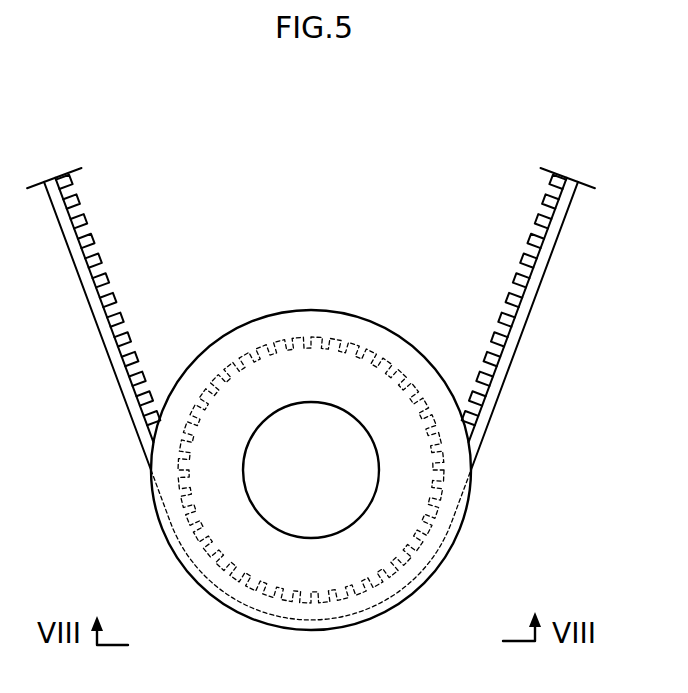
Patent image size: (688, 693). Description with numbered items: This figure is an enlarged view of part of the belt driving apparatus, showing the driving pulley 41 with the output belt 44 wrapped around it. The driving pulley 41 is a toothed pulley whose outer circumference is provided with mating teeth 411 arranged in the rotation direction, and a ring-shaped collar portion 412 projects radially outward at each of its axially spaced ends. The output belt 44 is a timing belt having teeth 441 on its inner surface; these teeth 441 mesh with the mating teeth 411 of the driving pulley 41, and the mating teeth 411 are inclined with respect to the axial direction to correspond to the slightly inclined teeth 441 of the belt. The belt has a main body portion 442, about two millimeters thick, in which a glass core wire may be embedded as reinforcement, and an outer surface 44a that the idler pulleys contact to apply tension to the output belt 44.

The driving pulley 41 is at (309, 431).
The mating teeth 411 is at (278, 343).
The collar portion 412 is at (222, 337).
The output belt 44 is at (336, 394).
The teeth 441 is at (528, 239).
The main body portion 442 is at (540, 275).
The outer surface 44a is at (522, 340).